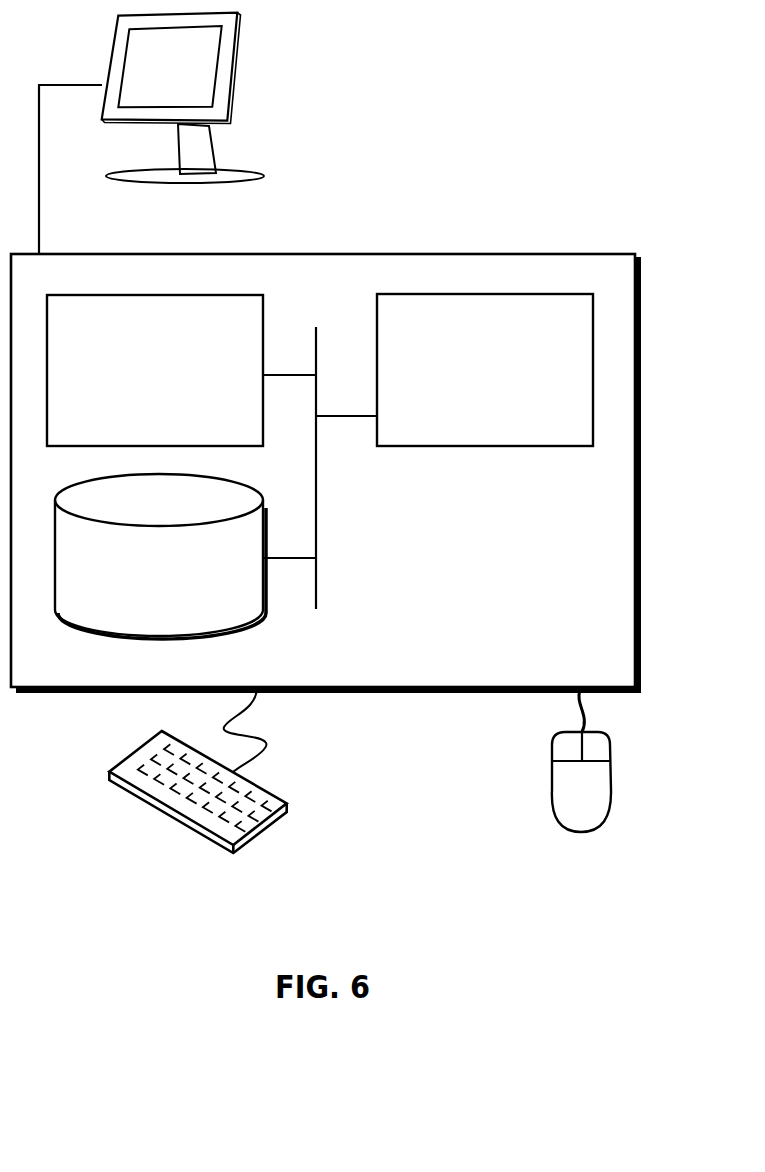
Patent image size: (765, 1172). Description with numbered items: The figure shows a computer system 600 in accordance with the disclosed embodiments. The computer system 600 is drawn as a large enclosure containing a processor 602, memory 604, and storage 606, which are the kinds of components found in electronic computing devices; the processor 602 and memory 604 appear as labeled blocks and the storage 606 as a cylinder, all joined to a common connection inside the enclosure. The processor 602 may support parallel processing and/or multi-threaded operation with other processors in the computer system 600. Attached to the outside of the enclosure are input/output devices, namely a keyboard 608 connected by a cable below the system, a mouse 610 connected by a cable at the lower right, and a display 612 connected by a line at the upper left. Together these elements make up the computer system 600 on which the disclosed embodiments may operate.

The computer system 600 is at (368, 235).
The processor 602 is at (468, 382).
The memory 604 is at (135, 382).
The storage 606 is at (142, 583).
The keyboard 608 is at (127, 791).
The mouse 610 is at (563, 801).
The display 612 is at (183, 113).